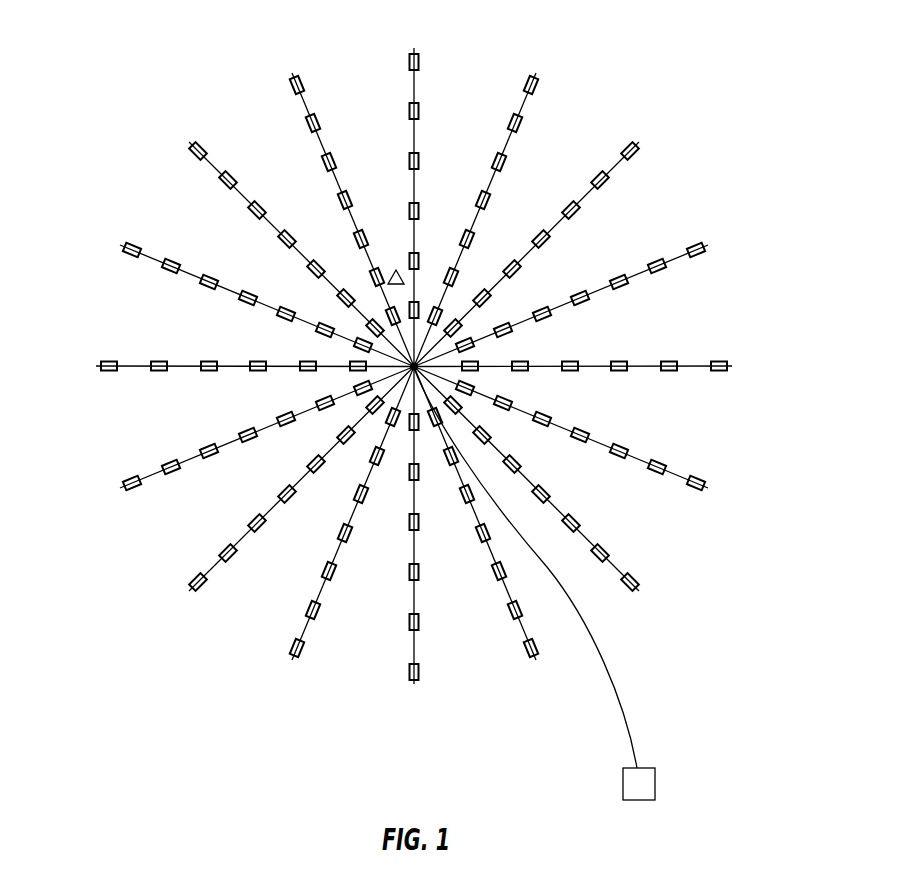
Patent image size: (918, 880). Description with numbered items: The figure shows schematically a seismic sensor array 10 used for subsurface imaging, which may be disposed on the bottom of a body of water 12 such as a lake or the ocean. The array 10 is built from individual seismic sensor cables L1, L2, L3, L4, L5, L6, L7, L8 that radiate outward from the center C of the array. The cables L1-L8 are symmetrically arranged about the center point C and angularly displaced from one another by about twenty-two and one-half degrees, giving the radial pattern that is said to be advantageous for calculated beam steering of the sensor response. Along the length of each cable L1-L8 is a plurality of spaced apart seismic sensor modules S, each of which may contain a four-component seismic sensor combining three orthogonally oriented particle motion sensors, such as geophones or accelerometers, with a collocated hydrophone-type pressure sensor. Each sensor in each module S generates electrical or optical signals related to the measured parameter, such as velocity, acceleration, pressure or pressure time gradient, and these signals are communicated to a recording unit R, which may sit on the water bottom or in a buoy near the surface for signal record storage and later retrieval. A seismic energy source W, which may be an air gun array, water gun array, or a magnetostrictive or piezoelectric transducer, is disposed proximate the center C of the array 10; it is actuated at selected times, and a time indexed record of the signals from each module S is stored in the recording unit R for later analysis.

The seismic sensor array 10 is at (113, 750).
The body of water 12 is at (801, 682).
The seismic sensor module S is at (732, 366).
The center of the sensor array C is at (413, 370).
The seismic energy source W is at (396, 268).
The recording unit R is at (655, 786).
The seismic sensor cable L1 is at (216, 564).
The seismic sensor cable L2 is at (307, 625).
The seismic sensor cable L3 is at (414, 632).
The seismic sensor cable L4 is at (523, 623).
The seismic sensor cable L5 is at (612, 563).
The seismic sensor cable L6 is at (673, 468).
The seismic sensor cable L7 is at (693, 366).
The seismic sensor cable L8 is at (680, 262).